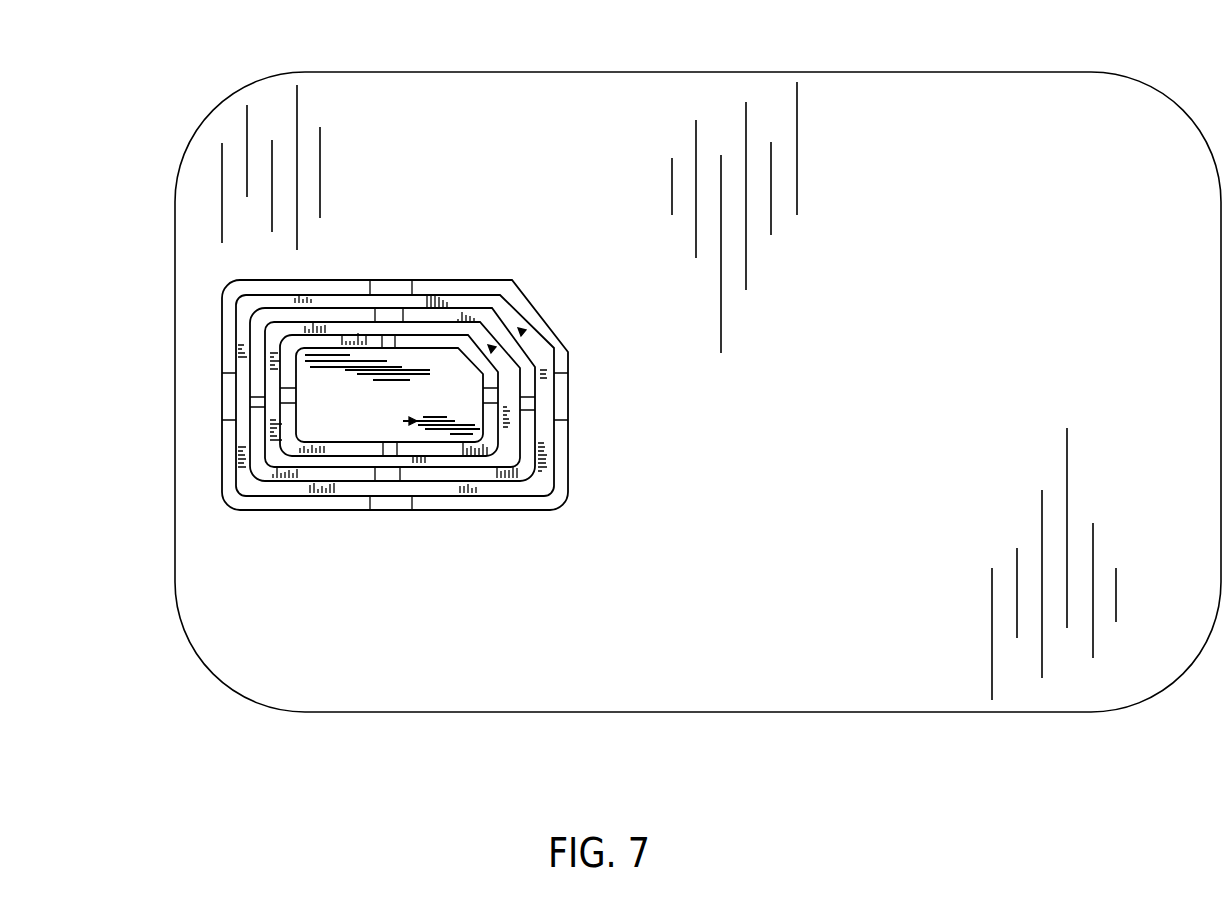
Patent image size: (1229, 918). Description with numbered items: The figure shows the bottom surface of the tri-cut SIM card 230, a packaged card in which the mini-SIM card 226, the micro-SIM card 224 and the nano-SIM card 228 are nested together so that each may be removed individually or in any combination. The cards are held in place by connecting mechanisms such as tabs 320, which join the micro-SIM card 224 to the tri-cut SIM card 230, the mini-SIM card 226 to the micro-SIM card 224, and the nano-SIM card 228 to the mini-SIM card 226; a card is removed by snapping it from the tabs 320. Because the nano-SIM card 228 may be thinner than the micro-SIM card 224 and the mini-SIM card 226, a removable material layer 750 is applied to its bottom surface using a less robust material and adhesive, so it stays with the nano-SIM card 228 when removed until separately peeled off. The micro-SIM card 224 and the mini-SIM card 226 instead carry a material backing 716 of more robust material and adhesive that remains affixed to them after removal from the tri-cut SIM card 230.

The tri-cut SIM card 230 is at (613, 105).
The mini-SIM card 226 is at (502, 302).
The micro-SIM card 224 is at (457, 328).
The nano-SIM card 228 is at (365, 355).
The material backing 716 is at (496, 348).
The tabs 320 is at (500, 392).
The material layer 750 is at (413, 425).